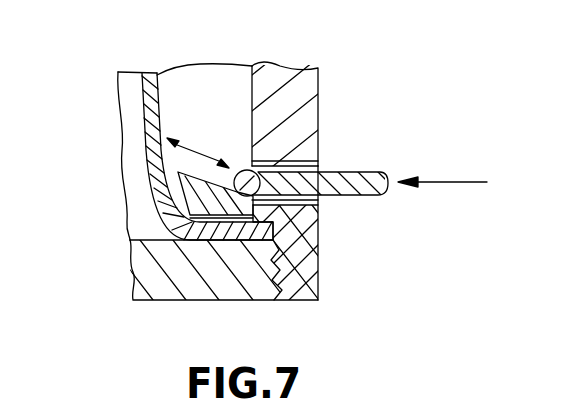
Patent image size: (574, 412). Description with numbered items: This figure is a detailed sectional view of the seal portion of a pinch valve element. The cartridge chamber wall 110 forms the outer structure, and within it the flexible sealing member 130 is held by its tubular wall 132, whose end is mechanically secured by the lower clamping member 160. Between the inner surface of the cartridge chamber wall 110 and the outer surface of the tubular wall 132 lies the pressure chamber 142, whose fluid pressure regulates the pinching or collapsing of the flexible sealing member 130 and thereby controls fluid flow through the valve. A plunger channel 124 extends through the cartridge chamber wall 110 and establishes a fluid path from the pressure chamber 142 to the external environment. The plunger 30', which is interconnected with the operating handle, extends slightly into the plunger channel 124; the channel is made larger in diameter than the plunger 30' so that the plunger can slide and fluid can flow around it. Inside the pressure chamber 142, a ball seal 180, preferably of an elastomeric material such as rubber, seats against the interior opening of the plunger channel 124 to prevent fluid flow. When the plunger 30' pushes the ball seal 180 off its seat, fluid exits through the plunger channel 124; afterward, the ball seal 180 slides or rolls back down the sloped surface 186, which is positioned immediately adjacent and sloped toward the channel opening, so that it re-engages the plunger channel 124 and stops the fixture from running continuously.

The flexible sealing member 130 is at (110, 88).
The pressure chamber 142 is at (193, 90).
The cartridge chamber wall 110 is at (298, 103).
The ball seal 180 is at (232, 168).
The plunger 30' is at (316, 153).
The tubular wall 132 is at (143, 122).
The sloped surface 186 is at (183, 198).
The plunger channel 124 is at (318, 228).
The lower clamping member 160 is at (208, 287).